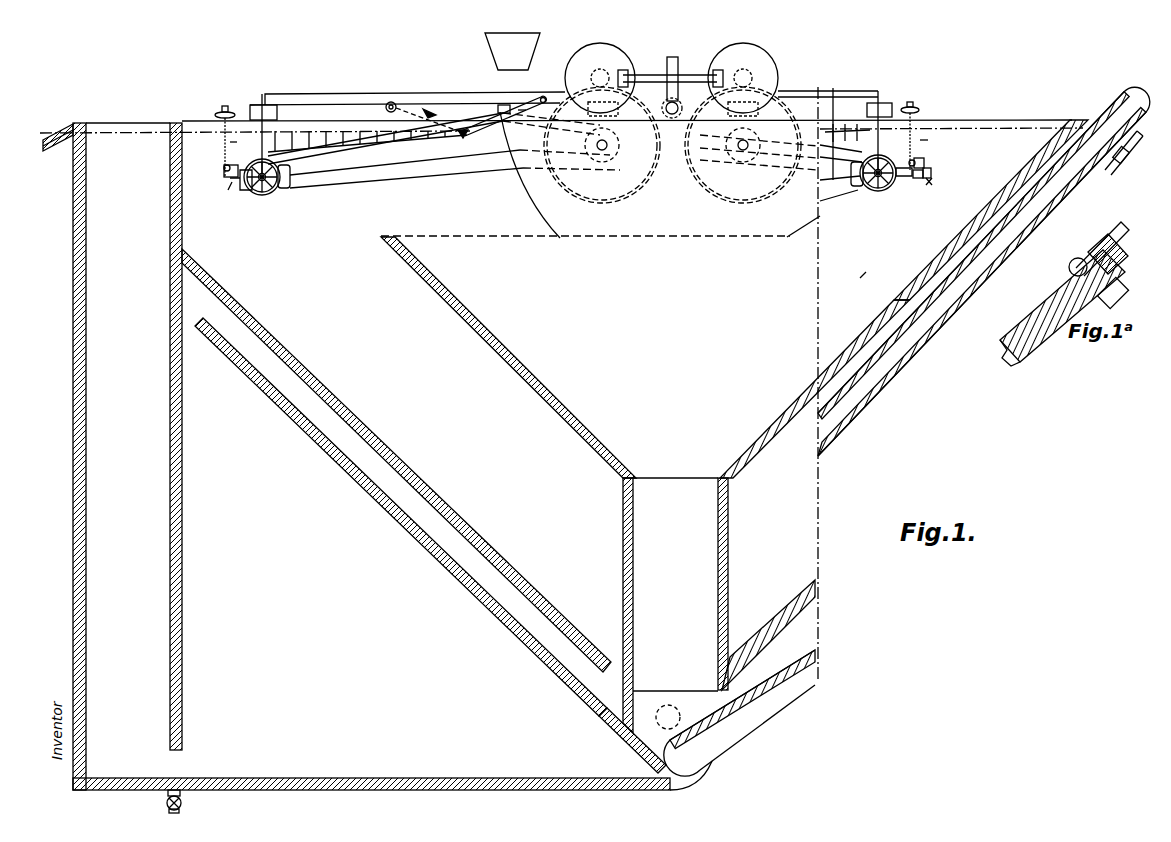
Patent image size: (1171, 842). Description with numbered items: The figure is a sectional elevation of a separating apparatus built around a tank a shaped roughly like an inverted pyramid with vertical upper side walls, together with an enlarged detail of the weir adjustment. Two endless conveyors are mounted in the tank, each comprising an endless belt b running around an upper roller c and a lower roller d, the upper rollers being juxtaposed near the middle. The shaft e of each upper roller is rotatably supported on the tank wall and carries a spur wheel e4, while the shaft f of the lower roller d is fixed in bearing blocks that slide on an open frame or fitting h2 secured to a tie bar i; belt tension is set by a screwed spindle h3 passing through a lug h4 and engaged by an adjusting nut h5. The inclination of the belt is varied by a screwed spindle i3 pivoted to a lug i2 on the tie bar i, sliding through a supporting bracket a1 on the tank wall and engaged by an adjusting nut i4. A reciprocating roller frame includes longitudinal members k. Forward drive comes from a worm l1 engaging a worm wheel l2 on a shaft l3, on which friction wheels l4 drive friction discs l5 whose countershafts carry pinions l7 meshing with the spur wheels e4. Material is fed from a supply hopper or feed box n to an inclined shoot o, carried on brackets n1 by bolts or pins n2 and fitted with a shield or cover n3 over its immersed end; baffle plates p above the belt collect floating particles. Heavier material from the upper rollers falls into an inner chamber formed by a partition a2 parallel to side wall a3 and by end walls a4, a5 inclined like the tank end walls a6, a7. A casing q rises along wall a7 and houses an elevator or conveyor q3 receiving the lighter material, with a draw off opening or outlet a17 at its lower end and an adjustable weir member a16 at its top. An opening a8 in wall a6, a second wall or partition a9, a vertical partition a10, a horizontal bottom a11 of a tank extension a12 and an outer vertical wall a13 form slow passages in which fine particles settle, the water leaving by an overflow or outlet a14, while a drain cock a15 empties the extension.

In FIG. 1, the tank a is at (866, 272).
In FIG. 1, the supporting bracket a1 is at (201, 121).
In FIG. 1, the partition a2 is at (675, 521).
In FIG. 1, the side wall a3 is at (978, 210).
In FIG. 1, the end wall a4 is at (522, 370).
In FIG. 1, the end wall a5 is at (797, 400).
In FIG. 1, the inclined end wall a6 is at (445, 497).
In FIG. 1, the inclined end wall a7 is at (805, 590).
In FIG. 1, the opening a8 is at (607, 690).
In FIG. 1, the second wall or partition a9 is at (422, 535).
In FIG. 1, the vertical partition a10 is at (175, 413).
In FIG. 1, the horizontal bottom a11 is at (294, 778).
In FIG. 1, the extension of the tank a12 is at (360, 655).
In FIG. 1, the vertical wall a13 is at (97, 456).
In FIG. 1, the overflow or outlet a14 is at (57, 140).
In FIG. 1, the drain cock a15 is at (180, 795).
In FIG. 1, the adjustable weir member a16 is at (1117, 158).
In FIG. 1A, the adjustable weir member a16 is at (1105, 252).
In FIG. 1, the draw off opening or outlet a17 is at (668, 705).
In FIG. 1, the endless belt b is at (453, 176).
In FIG. 1, the upper roller c is at (623, 148).
In FIG. 1, the lower roller d is at (268, 195).
In FIG. 1, the shaft e is at (600, 165).
In FIG. 1, the spur wheel e4 is at (660, 198).
In FIG. 1, the shaft f is at (290, 188).
In FIG. 1, the open frame or fitting h2 is at (240, 190).
In FIG. 1, the screwed spindle h3 is at (924, 174).
In FIG. 1, the lug h4 is at (928, 170).
In FIG. 1, the adjusting nut h5 is at (930, 182).
In FIG. 1, the tie bar i is at (507, 155).
In FIG. 1, the lug i2 is at (224, 167).
In FIG. 1, the screwed spindle i3 is at (940, 112).
In FIG. 1, the adjusting nut i4 is at (232, 110).
In FIG. 1, the longitudinal member k is at (832, 99).
In FIG. 1, the worm l1 is at (676, 100).
In FIG. 1, the worm wheel l2 is at (672, 90).
In FIG. 1, the shaft l3 is at (640, 75).
In FIG. 1, the friction wheel l4 is at (604, 70).
In FIG. 1, the friction disc l5 is at (588, 58).
In FIG. 1, the pinion l7 is at (592, 78).
In FIG. 1, the supply hopper or feed box n is at (486, 42).
In FIG. 1, the bracket n1 is at (543, 97).
In FIG. 1, the bolt or pin n2 is at (500, 107).
In FIG. 1, the shield or cover n3 is at (462, 130).
In FIG. 1, the inclined shoot o is at (522, 108).
In FIG. 1, the baffle plate p is at (378, 132).
In FIG. 1, the casing q is at (836, 440).
In FIG. 1A, the casing q is at (1040, 345).
In FIG. 1, the elevator or conveyor q3 is at (700, 728).